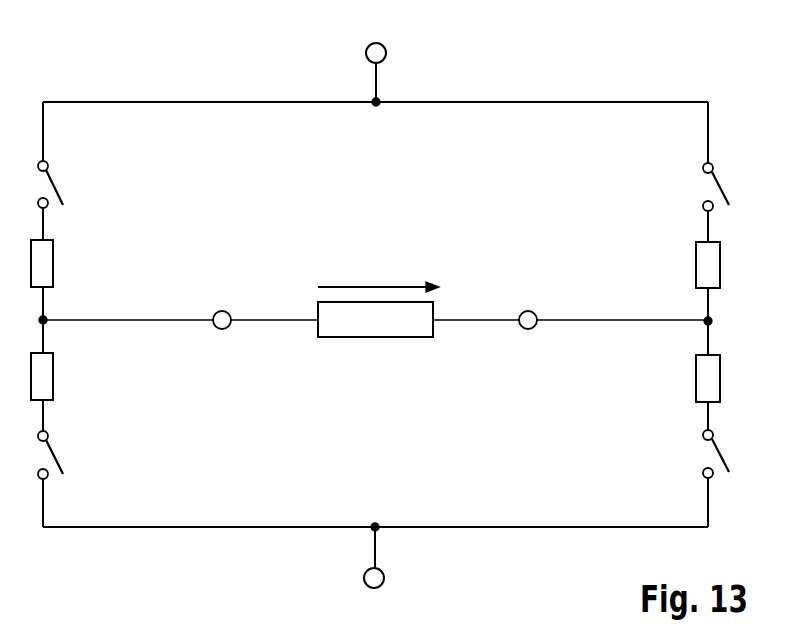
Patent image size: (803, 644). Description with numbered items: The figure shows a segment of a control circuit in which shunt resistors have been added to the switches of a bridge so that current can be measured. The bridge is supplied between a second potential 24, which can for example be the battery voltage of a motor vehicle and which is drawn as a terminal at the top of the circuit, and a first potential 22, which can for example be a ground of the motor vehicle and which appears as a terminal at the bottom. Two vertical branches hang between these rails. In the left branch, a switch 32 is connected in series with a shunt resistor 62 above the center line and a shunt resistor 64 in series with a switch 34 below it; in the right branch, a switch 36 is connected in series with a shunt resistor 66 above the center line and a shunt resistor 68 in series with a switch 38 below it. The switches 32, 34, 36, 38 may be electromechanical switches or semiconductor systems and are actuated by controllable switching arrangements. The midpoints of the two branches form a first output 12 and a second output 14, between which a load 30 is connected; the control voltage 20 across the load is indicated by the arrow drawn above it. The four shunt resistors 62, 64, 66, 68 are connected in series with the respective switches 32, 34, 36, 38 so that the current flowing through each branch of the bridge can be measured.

The first output 12 is at (222, 329).
The second output 14 is at (528, 329).
The control voltage 20 is at (375, 285).
The first potential 22 is at (364, 578).
The second potential 24 is at (366, 53).
The load 30 is at (372, 338).
The switch 32 is at (58, 188).
The switch 34 is at (58, 458).
The switch 36 is at (718, 188).
The switch 38 is at (718, 454).
The shunt resistor 62 is at (53, 263).
The shunt resistor 64 is at (53, 377).
The shunt resistor 66 is at (696, 263).
The shunt resistor 68 is at (696, 378).